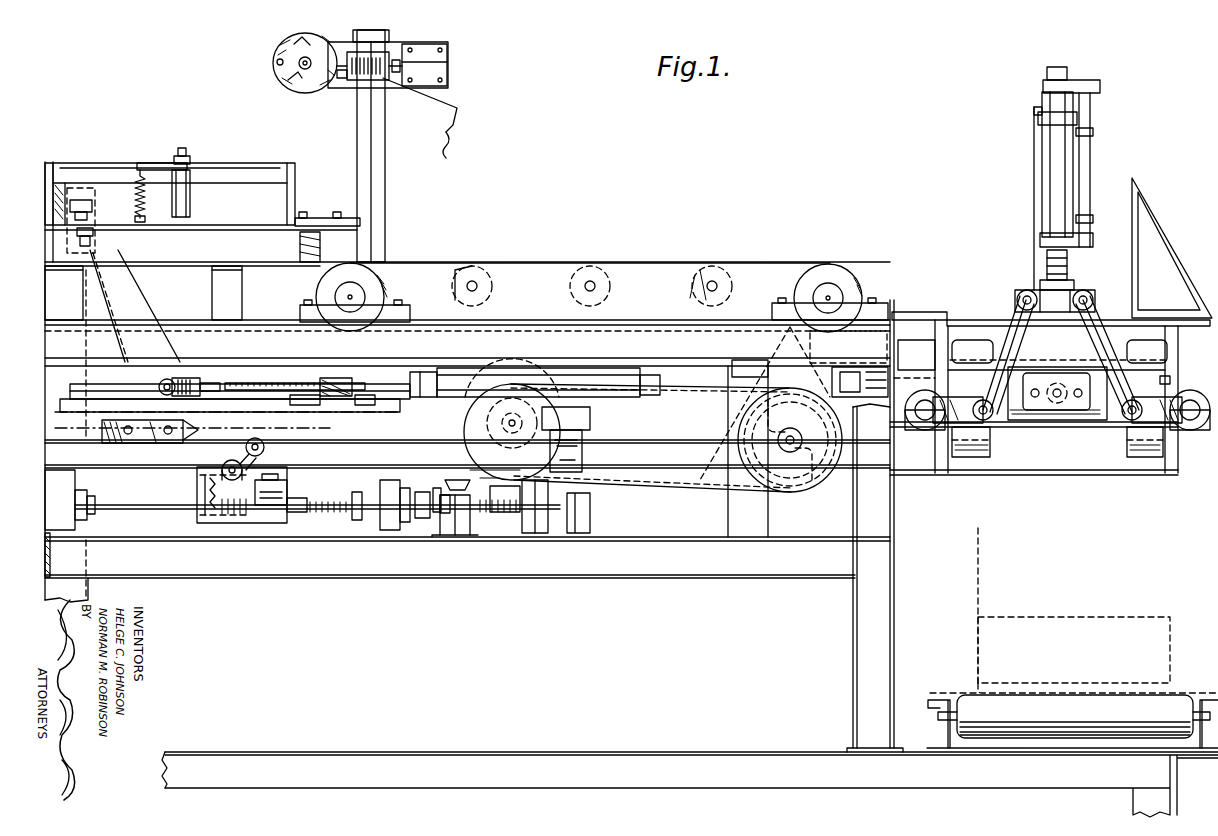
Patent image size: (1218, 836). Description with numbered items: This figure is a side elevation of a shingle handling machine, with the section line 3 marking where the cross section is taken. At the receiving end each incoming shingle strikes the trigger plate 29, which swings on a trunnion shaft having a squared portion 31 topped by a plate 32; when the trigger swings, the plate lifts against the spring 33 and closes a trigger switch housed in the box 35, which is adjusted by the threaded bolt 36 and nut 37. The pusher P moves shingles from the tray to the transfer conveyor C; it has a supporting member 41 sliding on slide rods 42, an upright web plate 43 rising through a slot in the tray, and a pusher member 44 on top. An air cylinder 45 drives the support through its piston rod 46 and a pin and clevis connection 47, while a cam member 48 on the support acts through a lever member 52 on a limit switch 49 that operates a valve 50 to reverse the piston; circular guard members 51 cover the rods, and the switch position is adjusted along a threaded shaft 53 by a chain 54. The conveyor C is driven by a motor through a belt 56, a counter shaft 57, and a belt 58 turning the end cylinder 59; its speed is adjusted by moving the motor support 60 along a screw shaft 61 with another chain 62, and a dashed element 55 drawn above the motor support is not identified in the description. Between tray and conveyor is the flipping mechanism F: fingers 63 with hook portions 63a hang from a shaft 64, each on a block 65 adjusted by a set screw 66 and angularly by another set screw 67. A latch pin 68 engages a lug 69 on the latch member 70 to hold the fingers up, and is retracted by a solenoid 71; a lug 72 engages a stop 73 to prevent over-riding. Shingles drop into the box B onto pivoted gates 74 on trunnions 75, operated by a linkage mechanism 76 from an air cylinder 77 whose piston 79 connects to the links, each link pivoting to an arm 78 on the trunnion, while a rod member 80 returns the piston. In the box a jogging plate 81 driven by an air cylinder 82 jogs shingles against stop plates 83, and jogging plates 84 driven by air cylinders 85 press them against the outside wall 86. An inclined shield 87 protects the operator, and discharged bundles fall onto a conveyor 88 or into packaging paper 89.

The section line 3— 3 is at (320, 383).
The trigger plate 29 is at (258, 211).
The squared portion 31 is at (96, 172).
The plate 32 is at (147, 162).
The spring 33 is at (135, 195).
The box 35 is at (186, 198).
The threaded bolt 36 is at (184, 148).
The nut 37 is at (188, 157).
The supporting member 41 is at (182, 376).
The slide rods 42 is at (292, 410).
The upright web plate 43 is at (133, 299).
The pusher member 44 is at (81, 218).
The air cylinder 45 is at (583, 377).
The piston rod 46 is at (274, 385).
The pin and clevis connection 47 is at (163, 378).
The cam member 48 is at (187, 440).
The limit switch 49 is at (262, 492).
The valve 50 is at (578, 415).
The circular guard members 51 is at (328, 392).
The lever member 52 is at (246, 448).
The threaded shaft 53 is at (302, 505).
The chain 54 is at (414, 512).
The guard 55 is at (490, 382).
The belt 56 is at (688, 392).
The counter shaft 57 is at (792, 446).
The belt 58 is at (780, 345).
The end cylinder 59 is at (848, 263).
The motor support 60 is at (487, 478).
The screw shaft 61 is at (558, 494).
The chain 62 is at (437, 492).
The fingers 63 is at (385, 78).
The right angle hook portions 63a is at (445, 152).
The shaft 64 is at (300, 66).
The block 65 is at (330, 80).
The set screw 66 is at (322, 46).
The set screw 67 is at (310, 80).
The latch pin 68 is at (345, 82).
The lug 69 is at (365, 50).
The latch member 70 is at (292, 78).
The solenoid 71 is at (432, 62).
The lug 72 is at (290, 50).
The stop 73 is at (276, 60).
The pivoted gates 74 is at (1005, 430).
The horizontal trunnion 75 is at (923, 427).
The linkage mechanism 76 is at (1018, 328).
The air cylinder 77 is at (1052, 192).
The arm 78 is at (962, 400).
The piston 79 is at (1048, 256).
The rod member 80 is at (1080, 167).
The jogging plate 81 is at (1056, 391).
The air cylinder 82 is at (1061, 383).
The stop plates 83 is at (967, 342).
The jogging plates 84 is at (947, 312).
The air cylinder 85 is at (853, 388).
The outside wall 86 is at (1165, 382).
The inclined shield 87 is at (1177, 275).
The conveyor 88 is at (1095, 713).
The packaging paper 89 is at (982, 578).
The shingle box B is at (1107, 437).
The transfer conveyor C is at (758, 262).
The shingle flipping mechanism F is at (228, 32).
The pusher P is at (95, 215).